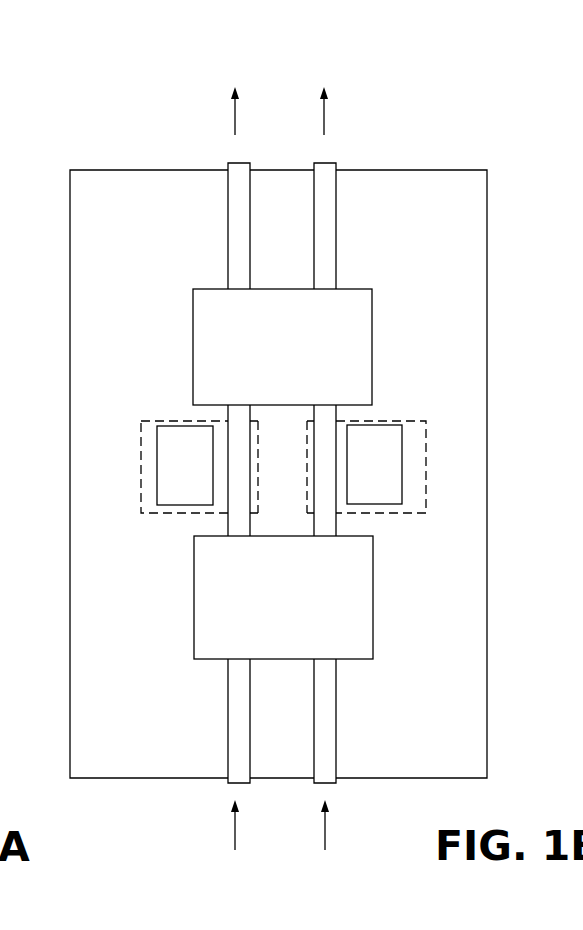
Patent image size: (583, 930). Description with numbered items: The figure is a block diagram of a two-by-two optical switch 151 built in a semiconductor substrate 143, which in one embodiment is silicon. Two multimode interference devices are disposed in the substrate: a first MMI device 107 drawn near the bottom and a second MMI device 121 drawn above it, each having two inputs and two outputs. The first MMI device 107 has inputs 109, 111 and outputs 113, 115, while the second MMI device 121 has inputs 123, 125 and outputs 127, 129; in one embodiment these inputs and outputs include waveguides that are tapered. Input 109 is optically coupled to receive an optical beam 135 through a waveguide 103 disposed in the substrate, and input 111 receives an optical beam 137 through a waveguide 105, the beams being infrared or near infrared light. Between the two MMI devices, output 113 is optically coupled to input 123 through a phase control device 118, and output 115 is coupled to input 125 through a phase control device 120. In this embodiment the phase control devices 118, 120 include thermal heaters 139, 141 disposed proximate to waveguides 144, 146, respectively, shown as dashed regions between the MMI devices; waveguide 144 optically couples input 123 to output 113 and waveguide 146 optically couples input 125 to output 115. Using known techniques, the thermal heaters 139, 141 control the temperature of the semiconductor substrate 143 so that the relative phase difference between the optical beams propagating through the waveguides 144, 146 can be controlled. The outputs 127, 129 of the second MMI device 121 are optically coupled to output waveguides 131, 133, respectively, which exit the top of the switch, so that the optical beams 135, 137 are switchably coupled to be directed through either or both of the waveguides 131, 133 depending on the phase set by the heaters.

The optical switch 151 is at (358, 61).
The semiconductor substrate 143 is at (70, 422).
The MMI device 121 is at (372, 330).
The MMI device 107 is at (373, 596).
The waveguide 131 is at (227, 214).
The waveguide 133 is at (335, 217).
The output 127 is at (227, 282).
The output 129 is at (335, 277).
The input 123 is at (204, 413).
The input 125 is at (350, 405).
The output 113 is at (222, 528).
The output 115 is at (343, 527).
The input 109 is at (210, 673).
The input 111 is at (355, 672).
The waveguide 103 is at (226, 748).
The waveguide 105 is at (338, 748).
The phase control device 118 is at (142, 462).
The phase control device 120 is at (473, 457).
The thermal heater 139 is at (185, 465).
The thermal heater 141 is at (374, 464).
The waveguide 144 is at (250, 457).
The waveguide 146 is at (312, 495).
The optical beam 135 is at (229, 838).
The optical beam 137 is at (331, 840).